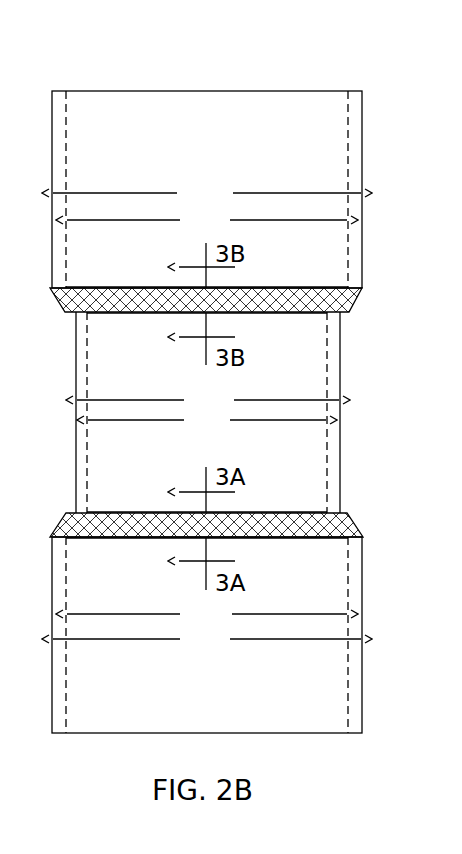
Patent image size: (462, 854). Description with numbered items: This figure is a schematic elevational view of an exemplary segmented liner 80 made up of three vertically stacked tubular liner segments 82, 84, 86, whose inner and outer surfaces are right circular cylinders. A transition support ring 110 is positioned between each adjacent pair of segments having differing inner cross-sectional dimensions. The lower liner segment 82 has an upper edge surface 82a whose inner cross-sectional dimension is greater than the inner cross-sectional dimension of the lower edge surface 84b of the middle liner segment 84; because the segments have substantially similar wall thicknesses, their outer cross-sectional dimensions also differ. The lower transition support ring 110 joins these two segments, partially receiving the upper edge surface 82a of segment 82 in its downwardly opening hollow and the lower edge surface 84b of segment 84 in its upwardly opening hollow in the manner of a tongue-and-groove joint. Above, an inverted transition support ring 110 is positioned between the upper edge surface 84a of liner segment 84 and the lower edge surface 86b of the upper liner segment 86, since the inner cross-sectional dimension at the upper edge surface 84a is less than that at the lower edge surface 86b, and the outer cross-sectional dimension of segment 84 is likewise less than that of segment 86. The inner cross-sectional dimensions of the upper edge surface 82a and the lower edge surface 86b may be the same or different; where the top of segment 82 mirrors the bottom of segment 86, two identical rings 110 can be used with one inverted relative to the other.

The liner 80 is at (190, 42).
The liner segment 82 is at (363, 670).
The upper edge surface of liner segment 82a is at (272, 538).
The liner segment 84 is at (340, 432).
The upper edge surface of liner segment 84a is at (265, 313).
The lower edge surface of liner segment 84b is at (249, 512).
The liner segment 86 is at (362, 164).
The lower edge surface of liner segment 86b is at (270, 287).
The transition support ring 110 is at (358, 296).